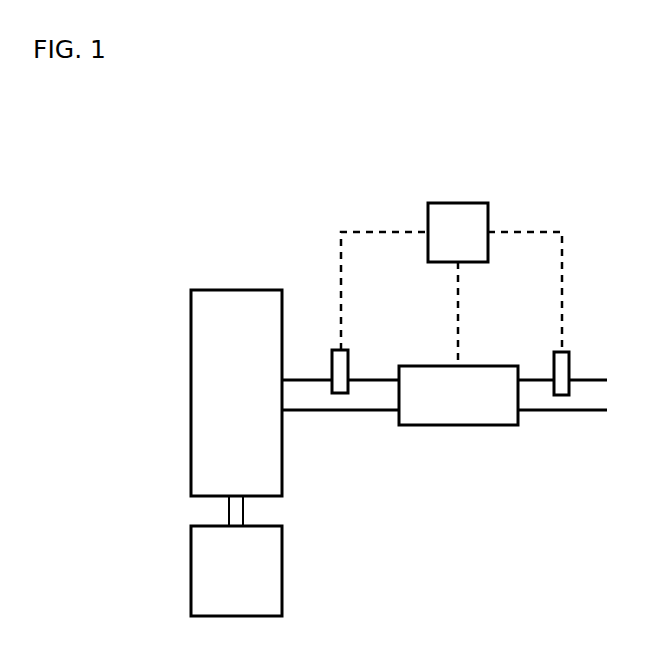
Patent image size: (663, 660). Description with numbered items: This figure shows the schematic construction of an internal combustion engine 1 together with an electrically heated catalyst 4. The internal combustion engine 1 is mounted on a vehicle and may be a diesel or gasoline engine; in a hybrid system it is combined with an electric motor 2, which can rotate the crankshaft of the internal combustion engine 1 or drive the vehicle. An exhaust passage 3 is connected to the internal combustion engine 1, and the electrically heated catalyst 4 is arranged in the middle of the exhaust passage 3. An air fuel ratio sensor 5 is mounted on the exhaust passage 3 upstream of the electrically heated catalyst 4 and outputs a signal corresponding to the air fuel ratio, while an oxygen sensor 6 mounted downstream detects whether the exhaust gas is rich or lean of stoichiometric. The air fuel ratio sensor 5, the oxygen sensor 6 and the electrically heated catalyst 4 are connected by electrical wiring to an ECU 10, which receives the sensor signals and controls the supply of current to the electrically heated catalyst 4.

The internal combustion engine 1 is at (237, 290).
The electric motor 2 is at (283, 571).
The exhaust passage 3 is at (353, 411).
The electrically heated catalyst 4 is at (457, 426).
The air fuel ratio sensor 5 is at (349, 357).
The oxygen sensor 6 is at (553, 358).
The ECU 10 is at (489, 209).